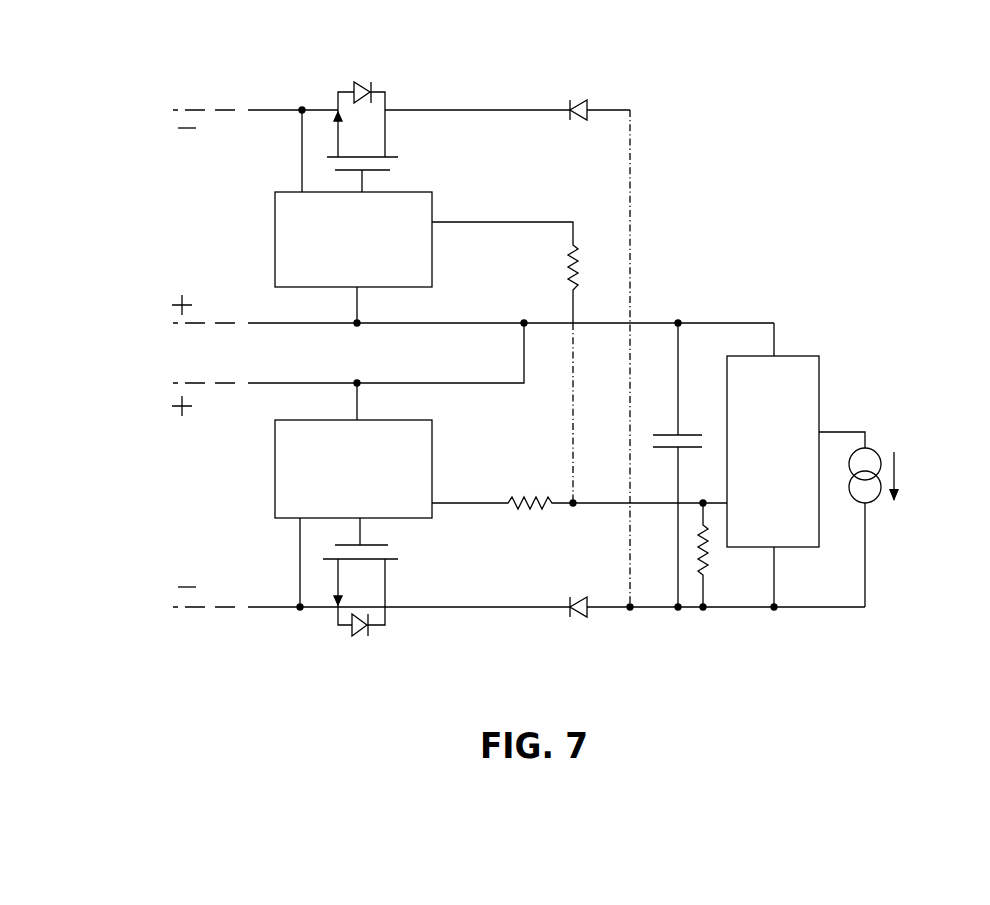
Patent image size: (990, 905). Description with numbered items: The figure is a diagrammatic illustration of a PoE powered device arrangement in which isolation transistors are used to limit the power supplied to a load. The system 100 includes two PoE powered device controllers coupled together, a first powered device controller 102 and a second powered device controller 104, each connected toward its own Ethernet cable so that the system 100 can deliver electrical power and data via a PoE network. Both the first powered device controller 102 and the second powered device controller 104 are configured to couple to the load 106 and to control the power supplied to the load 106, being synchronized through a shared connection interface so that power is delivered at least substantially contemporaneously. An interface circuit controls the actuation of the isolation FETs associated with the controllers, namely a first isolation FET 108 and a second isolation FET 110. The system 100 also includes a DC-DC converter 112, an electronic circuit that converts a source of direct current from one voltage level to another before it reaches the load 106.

The system 100 is at (867, 150).
The first powered device controller 102 is at (270, 205).
The second powered device controller 104 is at (270, 455).
The load 106 is at (872, 455).
The first isolation FET 108 is at (322, 100).
The second isolation FET 110 is at (325, 620).
The DC-DC converter 112 is at (822, 377).